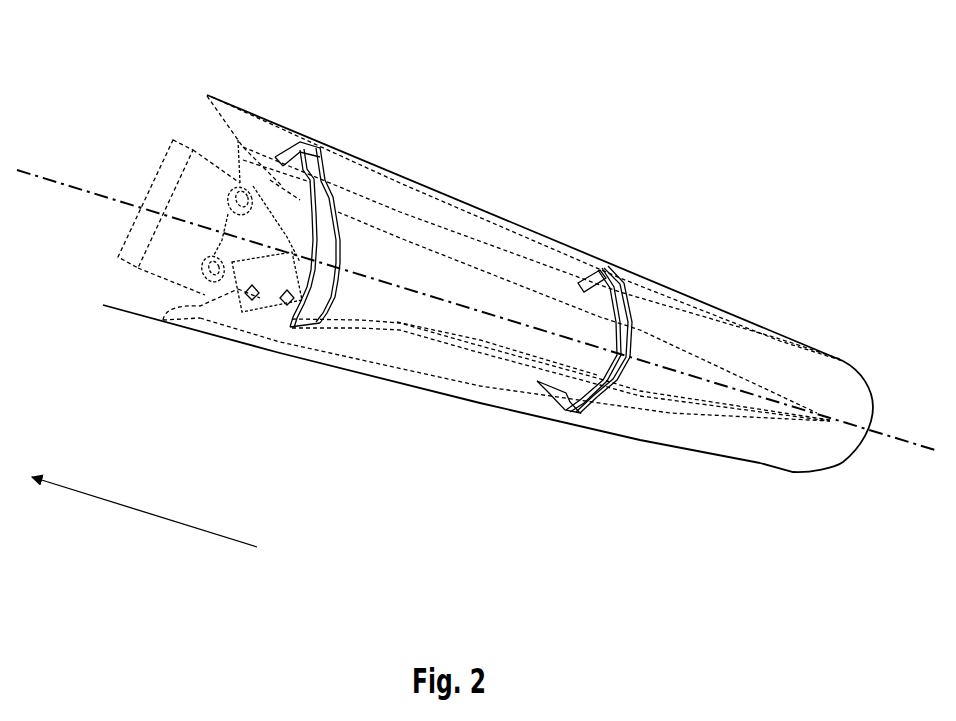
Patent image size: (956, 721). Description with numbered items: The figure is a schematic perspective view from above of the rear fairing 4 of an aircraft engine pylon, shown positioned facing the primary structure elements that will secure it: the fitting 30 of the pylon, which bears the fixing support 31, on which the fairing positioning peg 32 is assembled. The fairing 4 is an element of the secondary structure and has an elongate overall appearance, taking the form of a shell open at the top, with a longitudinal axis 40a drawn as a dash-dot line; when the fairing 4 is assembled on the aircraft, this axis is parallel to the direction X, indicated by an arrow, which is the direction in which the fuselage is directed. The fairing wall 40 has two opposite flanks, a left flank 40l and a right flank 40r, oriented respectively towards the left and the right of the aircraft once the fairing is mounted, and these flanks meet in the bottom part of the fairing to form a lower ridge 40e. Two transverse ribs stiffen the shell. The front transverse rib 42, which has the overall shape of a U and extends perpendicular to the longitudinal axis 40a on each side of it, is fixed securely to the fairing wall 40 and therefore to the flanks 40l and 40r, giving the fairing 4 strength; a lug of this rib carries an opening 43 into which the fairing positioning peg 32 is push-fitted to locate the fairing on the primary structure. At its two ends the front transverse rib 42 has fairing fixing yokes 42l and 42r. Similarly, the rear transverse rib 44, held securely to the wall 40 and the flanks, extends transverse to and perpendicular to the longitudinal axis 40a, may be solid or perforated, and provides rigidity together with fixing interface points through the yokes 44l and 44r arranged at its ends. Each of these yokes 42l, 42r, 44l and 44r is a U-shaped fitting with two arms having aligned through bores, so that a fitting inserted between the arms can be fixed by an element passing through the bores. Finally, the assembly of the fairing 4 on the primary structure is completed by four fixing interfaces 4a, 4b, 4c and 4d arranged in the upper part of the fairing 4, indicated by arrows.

The rear fairing 4 is at (626, 100).
The fixing interface 4a is at (207, 358).
The fixing interface 4b is at (320, 115).
The fixing interface 4c is at (612, 252).
The fixing interface 4d is at (543, 446).
The fitting 30 is at (170, 182).
The fixing support 31 is at (235, 240).
The fairing positioning peg 32 is at (252, 302).
The fairing wall 40 is at (457, 207).
The longitudinal axis 40a is at (87, 190).
The right flank 40r is at (480, 260).
The left flank 40l is at (402, 342).
The lower ridge 40e is at (497, 352).
The front transverse rib 42 is at (322, 217).
The right fairing fixing yoke 42r is at (298, 132).
The left fairing fixing yoke 42l is at (213, 323).
The opening 43 is at (287, 306).
The rear transverse rib 44 is at (628, 323).
The right yoke 44r is at (617, 285).
The left yoke 44l is at (567, 417).
The direction X is at (144, 510).